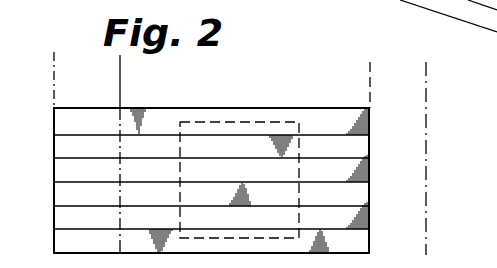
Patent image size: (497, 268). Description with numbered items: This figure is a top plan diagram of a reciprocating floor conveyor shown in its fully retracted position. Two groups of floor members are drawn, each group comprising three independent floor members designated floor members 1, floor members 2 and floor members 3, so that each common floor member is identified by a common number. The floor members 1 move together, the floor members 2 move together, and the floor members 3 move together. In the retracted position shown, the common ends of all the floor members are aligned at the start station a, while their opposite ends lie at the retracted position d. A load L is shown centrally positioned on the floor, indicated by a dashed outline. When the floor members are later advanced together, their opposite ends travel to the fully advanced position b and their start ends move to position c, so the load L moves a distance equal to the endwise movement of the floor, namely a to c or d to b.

The start station a is at (47, 68).
The fully advanced position b is at (429, 145).
The advanced position of start ends c is at (125, 145).
The retracted position of opposite ends d is at (376, 72).
The load L is at (250, 128).
The floor members of group 1 is at (211, 160).
The floor members of group 2 is at (211, 183).
The floor members of group 3 is at (211, 207).